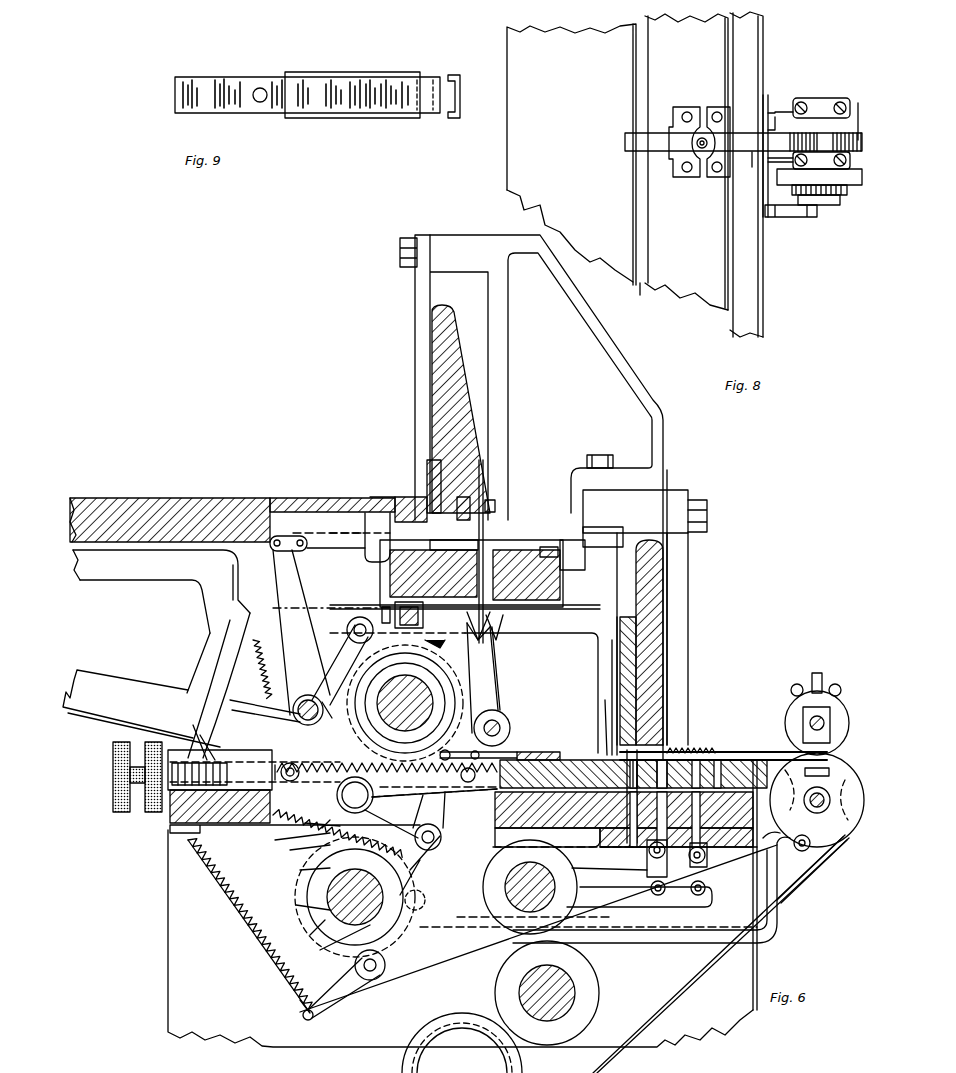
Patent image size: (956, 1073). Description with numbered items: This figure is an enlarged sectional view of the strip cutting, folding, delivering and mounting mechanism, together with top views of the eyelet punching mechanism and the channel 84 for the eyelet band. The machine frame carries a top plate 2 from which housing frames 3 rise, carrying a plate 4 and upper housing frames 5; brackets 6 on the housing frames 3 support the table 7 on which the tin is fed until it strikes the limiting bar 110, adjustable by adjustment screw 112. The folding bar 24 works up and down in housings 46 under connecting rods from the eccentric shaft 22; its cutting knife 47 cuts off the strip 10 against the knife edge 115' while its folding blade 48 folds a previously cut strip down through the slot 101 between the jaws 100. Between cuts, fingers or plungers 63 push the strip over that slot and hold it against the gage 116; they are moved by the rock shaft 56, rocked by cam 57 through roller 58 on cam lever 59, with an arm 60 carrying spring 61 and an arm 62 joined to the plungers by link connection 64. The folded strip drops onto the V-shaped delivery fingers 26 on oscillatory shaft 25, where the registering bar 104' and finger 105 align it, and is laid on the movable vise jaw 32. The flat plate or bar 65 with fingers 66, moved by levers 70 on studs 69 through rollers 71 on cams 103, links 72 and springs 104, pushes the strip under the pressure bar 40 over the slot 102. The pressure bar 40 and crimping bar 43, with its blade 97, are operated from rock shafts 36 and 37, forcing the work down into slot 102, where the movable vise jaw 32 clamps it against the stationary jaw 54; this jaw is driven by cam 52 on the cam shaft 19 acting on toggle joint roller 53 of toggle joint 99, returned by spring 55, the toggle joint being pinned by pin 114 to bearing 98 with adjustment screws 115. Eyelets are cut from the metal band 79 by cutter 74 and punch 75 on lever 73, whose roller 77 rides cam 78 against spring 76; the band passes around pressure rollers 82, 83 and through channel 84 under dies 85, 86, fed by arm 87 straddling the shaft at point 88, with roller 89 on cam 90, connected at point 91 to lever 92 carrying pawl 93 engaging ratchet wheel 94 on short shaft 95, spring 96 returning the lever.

In FIG. 6, the top plate 2 is at (190, 816).
In FIG. 6, the housing frames 3 is at (553, 633).
In FIG. 6, the plate 4 is at (420, 498).
In FIG. 6, the upper housing frames 5 is at (647, 393).
In FIG. 6, the brackets 6 is at (105, 695).
In FIG. 6, the table 7 is at (125, 510).
In FIG. 6, the strip 10 is at (430, 548).
In FIG. 6, the shaft 19 is at (295, 935).
In FIG. 6, the eccentric shaft 22 is at (383, 728).
In FIG. 6, the folding bar 24 is at (447, 380).
In FIG. 6, the oscillatory shaft 25 is at (505, 724).
In FIG. 6, the delivery fingers 26 is at (485, 680).
In FIG. 8, the movable vise jaw 32 is at (520, 146).
In FIG. 6, the movable vise jaw 32 is at (583, 757).
In FIG. 6, the rock shaft 36 is at (545, 895).
In FIG. 6, the rock shaft 37 is at (530, 1005).
In FIG. 6, the pressure bar 40 is at (617, 626).
In FIG. 6, the crimping bar 43 is at (650, 630).
In FIG. 6, the housings 46 is at (455, 290).
In FIG. 6, the cutting knife 47 is at (425, 488).
In FIG. 6, the folding blade 48 is at (505, 507).
In FIG. 6, the cam 52 is at (300, 856).
In FIG. 6, the toggle joint roller 53 is at (350, 769).
In FIG. 8, the stationary jaw 54 is at (722, 68).
In FIG. 6, the stationary jaw 54 is at (725, 752).
In FIG. 6, the spring 55 is at (415, 800).
In FIG. 6, the rock shaft 56 is at (295, 726).
In FIG. 6, the cam 57 is at (335, 726).
In FIG. 6, the roller 58 is at (362, 620).
In FIG. 6, the cam lever 59 is at (322, 660).
In FIG. 6, the arm 60 is at (240, 710).
In FIG. 6, the spring 61 is at (240, 652).
In FIG. 6, the arm 62 is at (300, 676).
In FIG. 6, the fingers or plungers 63 is at (340, 547).
In FIG. 6, the link connection 64 is at (296, 537).
In FIG. 6, the flat plate or bar 65 is at (548, 757).
In FIG. 6, the fingers 66 is at (608, 735).
In FIG. 6, the stud 69 is at (441, 842).
In FIG. 6, the levers 70 is at (440, 805).
In FIG. 6, the rollers 71 is at (425, 902).
In FIG. 6, the links 72 is at (455, 752).
In FIG. 6, the lever 73 is at (410, 982).
In FIG. 6, the cutter 74 is at (647, 865).
In FIG. 6, the punch 75 is at (705, 862).
In FIG. 6, the spring 76 is at (235, 912).
In FIG. 6, the roller 77 is at (355, 1008).
In FIG. 6, the cam 78 is at (290, 895).
In FIG. 9, the metal band 79 is at (405, 95).
In FIG. 8, the metal band 79 is at (648, 142).
In FIG. 6, the metal band 79 is at (770, 752).
In FIG. 8, the pressure roller 82 is at (812, 145).
In FIG. 6, the pressure roller 82 is at (825, 720).
In FIG. 8, the pressure roller 83 is at (858, 110).
In FIG. 6, the pressure roller 83 is at (850, 820).
In FIG. 9, the channel 84 is at (368, 118).
In FIG. 8, the channel 84 is at (757, 132).
In FIG. 8, the die 85 is at (690, 178).
In FIG. 6, the die 85 is at (665, 750).
In FIG. 8, the die 86 is at (720, 175).
In FIG. 6, the die 86 is at (700, 750).
In FIG. 6, the arm 87 is at (690, 940).
In FIG. 6, the point 88 is at (288, 984).
In FIG. 6, the roller 89 is at (435, 875).
In FIG. 6, the cam 90 is at (290, 882).
In FIG. 6, the point 91 is at (802, 851).
In FIG. 6, the lever 92 is at (835, 848).
In FIG. 6, the pawl 93 is at (830, 750).
In FIG. 6, the ratchet wheel 94 is at (825, 800).
In FIG. 6, the short shaft 95 is at (830, 775).
In FIG. 6, the spring 96 is at (300, 840).
In FIG. 6, the knife or blade 97 is at (650, 725).
In FIG. 6, the bearing 98 is at (198, 758).
In FIG. 6, the toggle joint 99 is at (372, 768).
In FIG. 6, the jaws 100 is at (433, 552).
In FIG. 6, the slot 101 is at (493, 617).
In FIG. 8, the slot 102 is at (640, 288).
In FIG. 6, the slot 102 is at (636, 290).
In FIG. 6, the cams 103 is at (425, 975).
In FIG. 6, the springs 104 is at (338, 829).
In FIG. 6, the registering bar 104' is at (445, 651).
In FIG. 6, the finger 105 is at (497, 640).
In FIG. 6, the limiting bar 110 is at (490, 470).
In FIG. 6, the adjustment screw 112 is at (500, 492).
In FIG. 6, the pin 114 is at (290, 752).
In FIG. 6, the adjustment screws 115 is at (134, 779).
In FIG. 6, the sleeve 115' is at (364, 479).
In FIG. 6, the gage 116 is at (545, 547).